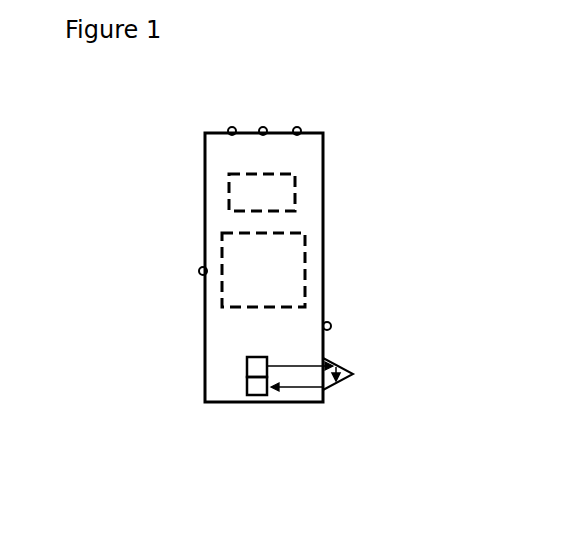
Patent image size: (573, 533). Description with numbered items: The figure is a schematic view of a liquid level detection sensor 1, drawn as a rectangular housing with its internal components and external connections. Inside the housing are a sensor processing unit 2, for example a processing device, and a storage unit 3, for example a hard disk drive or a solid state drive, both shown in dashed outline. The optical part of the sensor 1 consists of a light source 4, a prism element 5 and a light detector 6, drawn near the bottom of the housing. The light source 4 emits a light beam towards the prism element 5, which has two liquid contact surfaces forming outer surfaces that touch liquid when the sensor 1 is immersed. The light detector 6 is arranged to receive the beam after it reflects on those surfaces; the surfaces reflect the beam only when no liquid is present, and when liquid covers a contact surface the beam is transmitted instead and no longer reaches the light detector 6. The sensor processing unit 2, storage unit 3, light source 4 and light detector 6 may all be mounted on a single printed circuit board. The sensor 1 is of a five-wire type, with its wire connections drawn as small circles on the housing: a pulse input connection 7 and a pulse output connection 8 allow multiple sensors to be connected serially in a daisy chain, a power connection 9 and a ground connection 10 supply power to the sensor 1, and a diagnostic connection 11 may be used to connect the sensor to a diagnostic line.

The liquid level detection sensor 1 is at (166, 157).
The sensor processing unit 2 is at (243, 252).
The storage unit 3 is at (265, 193).
The light source 4 is at (257, 363).
The prism element 5 is at (341, 370).
The light detector 6 is at (258, 386).
The pulse input connection 7 is at (200, 273).
The pulse output connection 8 is at (331, 325).
The power connection 9 is at (230, 128).
The ground connection 10 is at (265, 128).
The diagnostic connection 11 is at (302, 128).